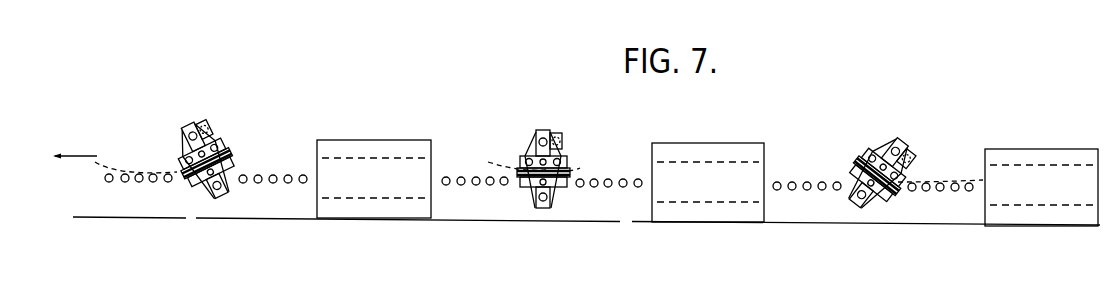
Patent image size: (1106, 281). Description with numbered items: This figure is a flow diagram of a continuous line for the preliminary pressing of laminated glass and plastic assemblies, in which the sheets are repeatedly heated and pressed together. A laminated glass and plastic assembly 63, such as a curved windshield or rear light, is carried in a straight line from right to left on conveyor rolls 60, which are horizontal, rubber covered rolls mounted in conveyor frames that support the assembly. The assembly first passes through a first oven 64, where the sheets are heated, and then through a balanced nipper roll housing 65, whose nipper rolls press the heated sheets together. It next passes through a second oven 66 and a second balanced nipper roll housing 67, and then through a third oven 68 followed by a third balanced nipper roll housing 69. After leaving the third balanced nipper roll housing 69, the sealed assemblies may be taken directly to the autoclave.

The conveyor rolls 60 is at (301, 196).
The laminated glass and plastic assembly 63 is at (983, 179).
The first oven 64 is at (1036, 149).
The balanced nipper roll housing 65 is at (883, 136).
The second oven 66 is at (706, 143).
The second balanced nipper roll housing 67 is at (545, 126).
The third oven 68 is at (369, 139).
The third balanced nipper roll housing 69 is at (193, 122).